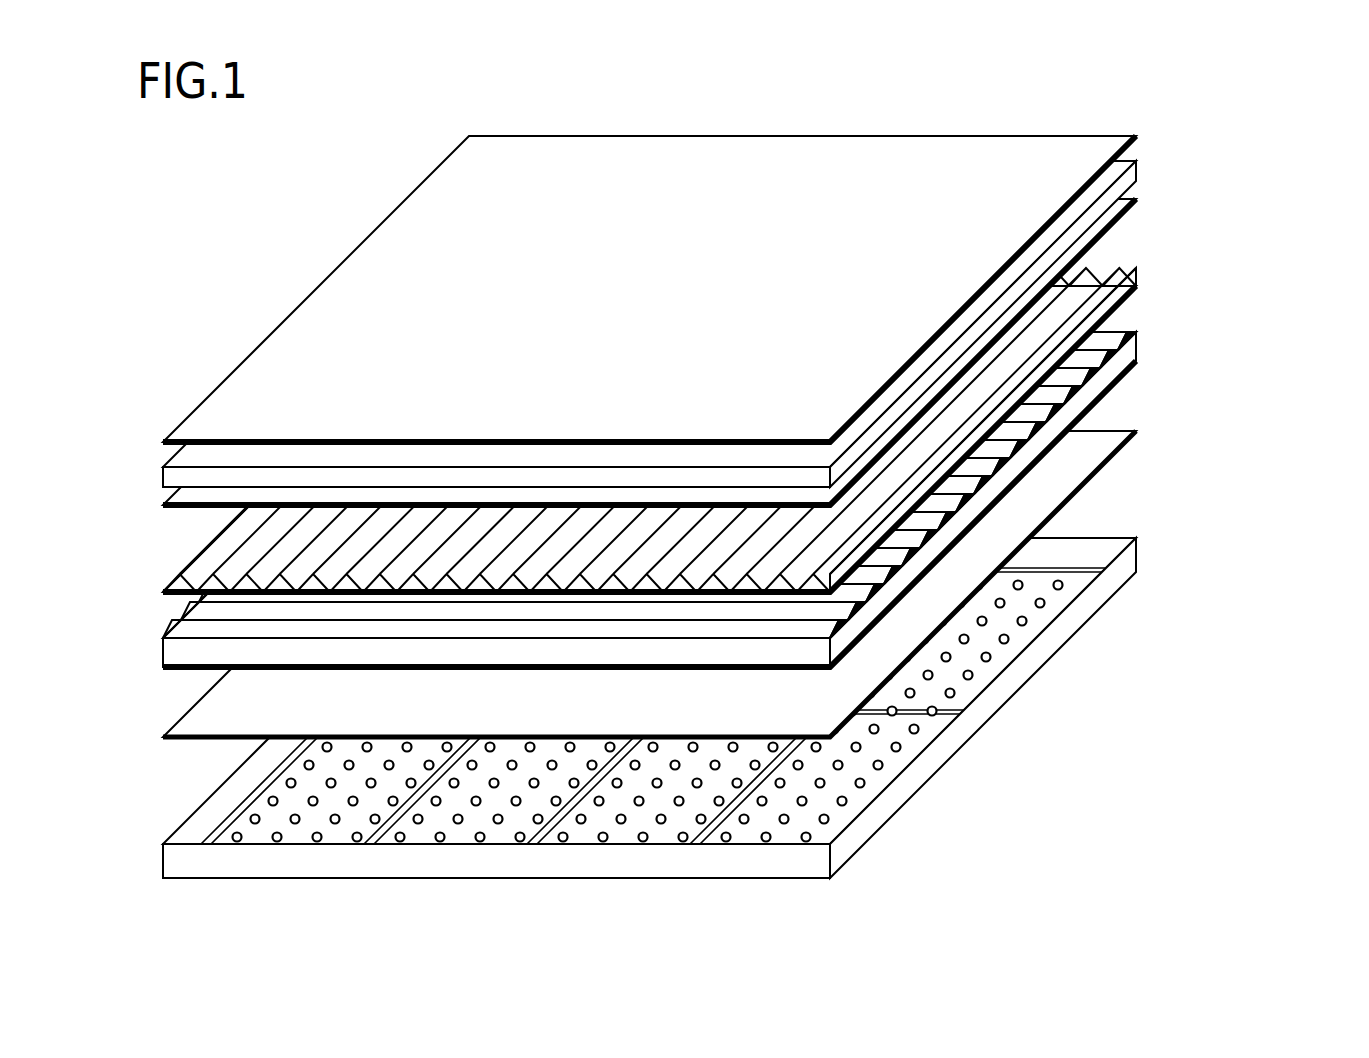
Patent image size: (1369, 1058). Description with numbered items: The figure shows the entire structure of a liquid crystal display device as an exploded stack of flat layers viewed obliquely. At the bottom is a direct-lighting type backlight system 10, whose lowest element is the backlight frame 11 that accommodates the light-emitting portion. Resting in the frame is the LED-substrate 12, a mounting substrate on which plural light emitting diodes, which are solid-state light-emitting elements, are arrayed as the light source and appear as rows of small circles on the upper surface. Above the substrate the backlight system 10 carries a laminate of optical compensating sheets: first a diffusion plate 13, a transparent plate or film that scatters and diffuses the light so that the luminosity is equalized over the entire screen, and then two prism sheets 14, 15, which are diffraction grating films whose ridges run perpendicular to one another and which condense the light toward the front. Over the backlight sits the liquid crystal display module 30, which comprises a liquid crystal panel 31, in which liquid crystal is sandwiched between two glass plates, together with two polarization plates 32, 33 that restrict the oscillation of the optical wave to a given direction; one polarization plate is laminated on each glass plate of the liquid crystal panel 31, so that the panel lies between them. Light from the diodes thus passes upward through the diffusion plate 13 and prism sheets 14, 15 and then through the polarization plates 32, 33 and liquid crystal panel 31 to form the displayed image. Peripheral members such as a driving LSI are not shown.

The backlight system 10 is at (749, 612).
The backlight frame 11 is at (1137, 545).
The LED-substrate 12 is at (425, 830).
The diffusion plate 13 is at (1133, 428).
The prism sheet 14 is at (1133, 360).
The prism sheet 15 is at (1253, 555).
The liquid crystal display module 30 is at (749, 296).
The liquid crystal panel 31 is at (1133, 162).
The polarization plate 32 is at (1133, 200).
The polarization plate 33 is at (1253, 228).